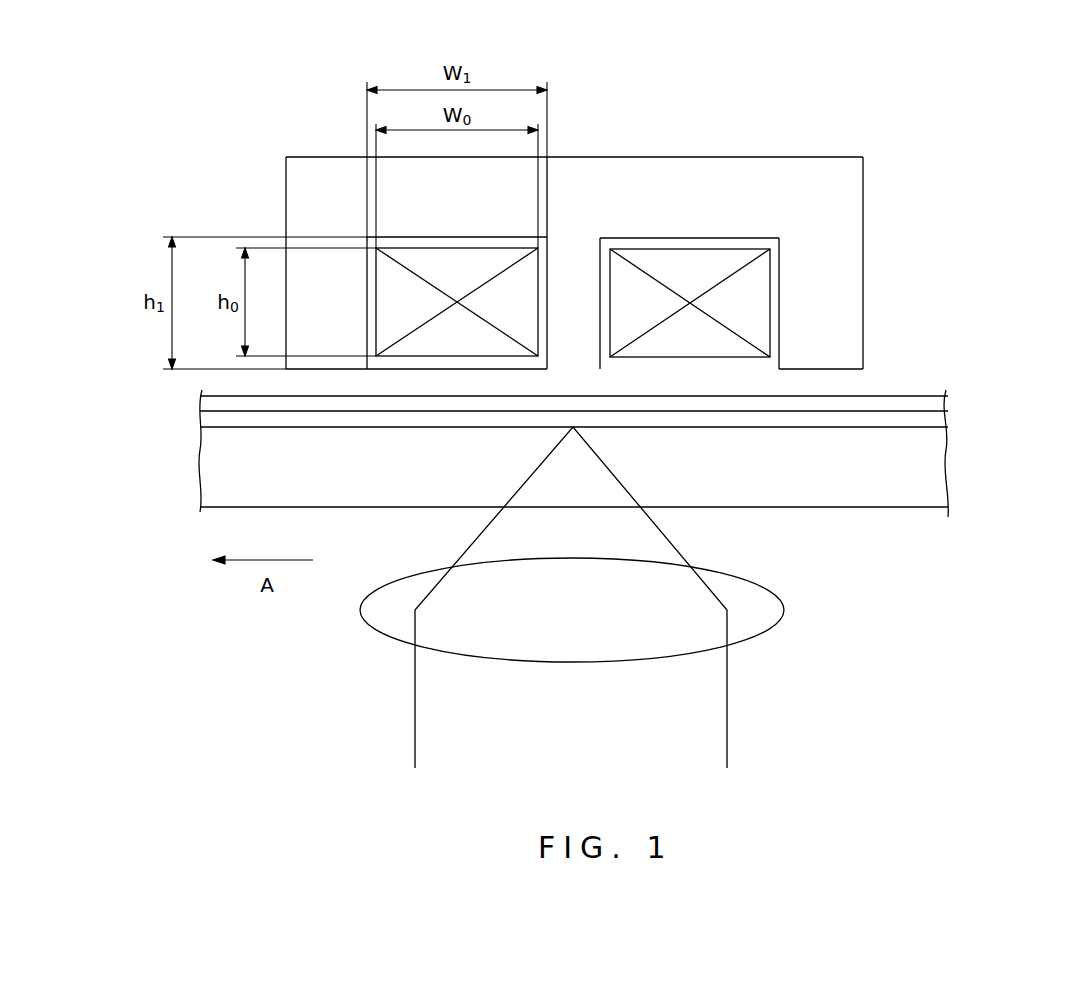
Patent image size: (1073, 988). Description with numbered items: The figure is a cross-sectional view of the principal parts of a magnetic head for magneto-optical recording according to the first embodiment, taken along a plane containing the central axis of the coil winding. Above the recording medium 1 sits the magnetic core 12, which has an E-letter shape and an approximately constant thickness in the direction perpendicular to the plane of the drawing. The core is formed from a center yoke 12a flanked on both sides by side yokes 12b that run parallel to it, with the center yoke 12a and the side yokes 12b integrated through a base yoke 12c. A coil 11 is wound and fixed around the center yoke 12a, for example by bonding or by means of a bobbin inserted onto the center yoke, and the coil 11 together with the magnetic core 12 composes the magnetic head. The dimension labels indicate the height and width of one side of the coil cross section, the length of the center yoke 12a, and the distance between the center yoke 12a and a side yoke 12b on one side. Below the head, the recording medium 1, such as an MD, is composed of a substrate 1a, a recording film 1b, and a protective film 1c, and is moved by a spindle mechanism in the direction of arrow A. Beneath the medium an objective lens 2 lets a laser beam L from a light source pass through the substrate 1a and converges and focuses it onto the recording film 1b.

The recording medium 1 is at (1028, 385).
The substrate 1a is at (938, 470).
The recording film 1b is at (938, 425).
The protective film 1c is at (940, 405).
The objective lens 2 is at (770, 617).
The coil 11 is at (762, 310).
The magnetic core 12 is at (902, 63).
The center yoke 12a is at (572, 297).
The side yokes 12b is at (833, 282).
The base yoke 12c is at (730, 197).
The laser beam L is at (727, 710).